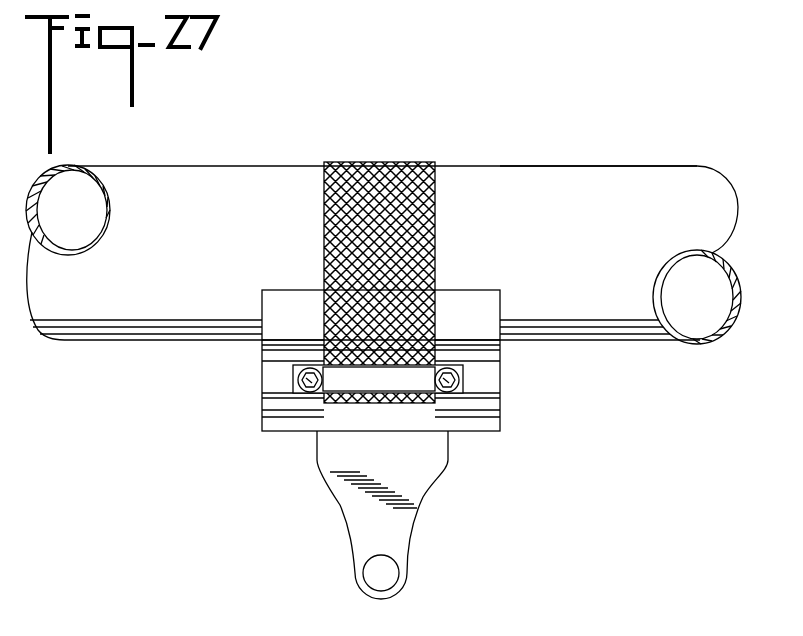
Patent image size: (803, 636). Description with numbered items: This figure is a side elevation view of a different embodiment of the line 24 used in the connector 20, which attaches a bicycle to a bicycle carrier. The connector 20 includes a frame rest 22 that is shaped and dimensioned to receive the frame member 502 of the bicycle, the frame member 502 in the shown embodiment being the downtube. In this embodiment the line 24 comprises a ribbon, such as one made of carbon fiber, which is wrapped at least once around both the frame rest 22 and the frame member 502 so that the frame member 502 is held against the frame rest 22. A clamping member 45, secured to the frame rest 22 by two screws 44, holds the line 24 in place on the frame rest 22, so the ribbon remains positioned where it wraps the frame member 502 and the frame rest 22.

The connector 20 is at (443, 147).
The frame rest 22 is at (249, 373).
The line 24 is at (367, 162).
The screws 44 is at (322, 380).
The clamping member 45 is at (360, 378).
The frame member 502 is at (555, 184).